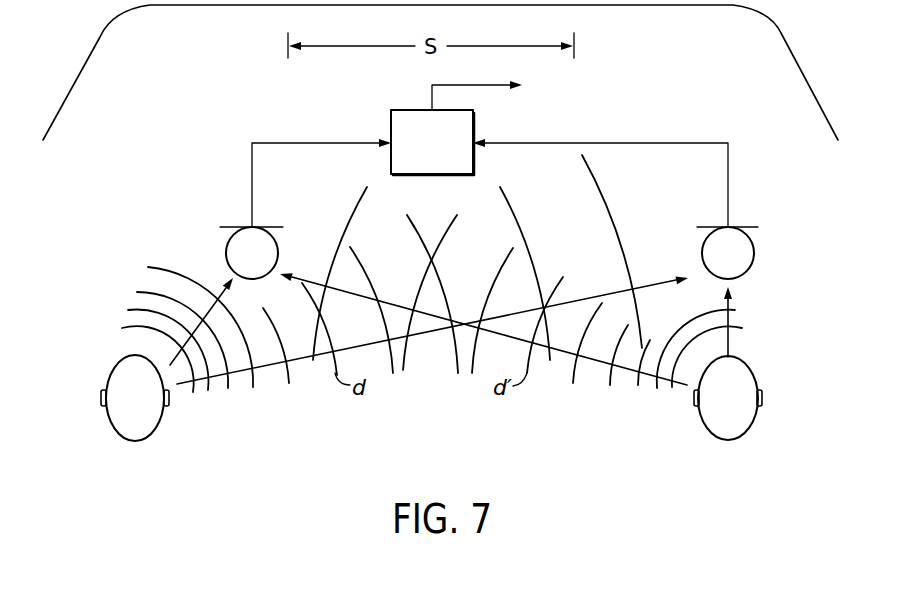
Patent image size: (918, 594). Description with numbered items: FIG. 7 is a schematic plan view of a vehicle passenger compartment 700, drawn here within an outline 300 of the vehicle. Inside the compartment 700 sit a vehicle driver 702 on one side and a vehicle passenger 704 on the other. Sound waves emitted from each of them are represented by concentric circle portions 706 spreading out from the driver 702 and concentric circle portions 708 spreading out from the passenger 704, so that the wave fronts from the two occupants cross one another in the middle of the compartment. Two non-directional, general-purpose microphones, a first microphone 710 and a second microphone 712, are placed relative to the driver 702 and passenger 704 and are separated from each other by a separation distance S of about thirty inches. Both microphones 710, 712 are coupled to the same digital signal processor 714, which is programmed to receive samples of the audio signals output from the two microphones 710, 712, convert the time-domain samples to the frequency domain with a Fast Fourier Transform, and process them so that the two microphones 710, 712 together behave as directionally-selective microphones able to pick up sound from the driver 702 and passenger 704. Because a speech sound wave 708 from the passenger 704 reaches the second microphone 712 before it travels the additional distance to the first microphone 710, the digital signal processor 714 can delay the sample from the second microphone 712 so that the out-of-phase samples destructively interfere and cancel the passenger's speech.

The vehicle windshield outline 300 is at (440, 72).
The vehicle passenger compartment 700 is at (712, 56).
The vehicle driver 702 is at (117, 368).
The vehicle passenger 704 is at (747, 428).
The concentric circle portions 706 is at (502, 190).
The concentric circle portions 708 is at (357, 191).
The first microphone 710 is at (232, 251).
The second microphone 712 is at (747, 247).
The digital signal processor 714 is at (405, 110).